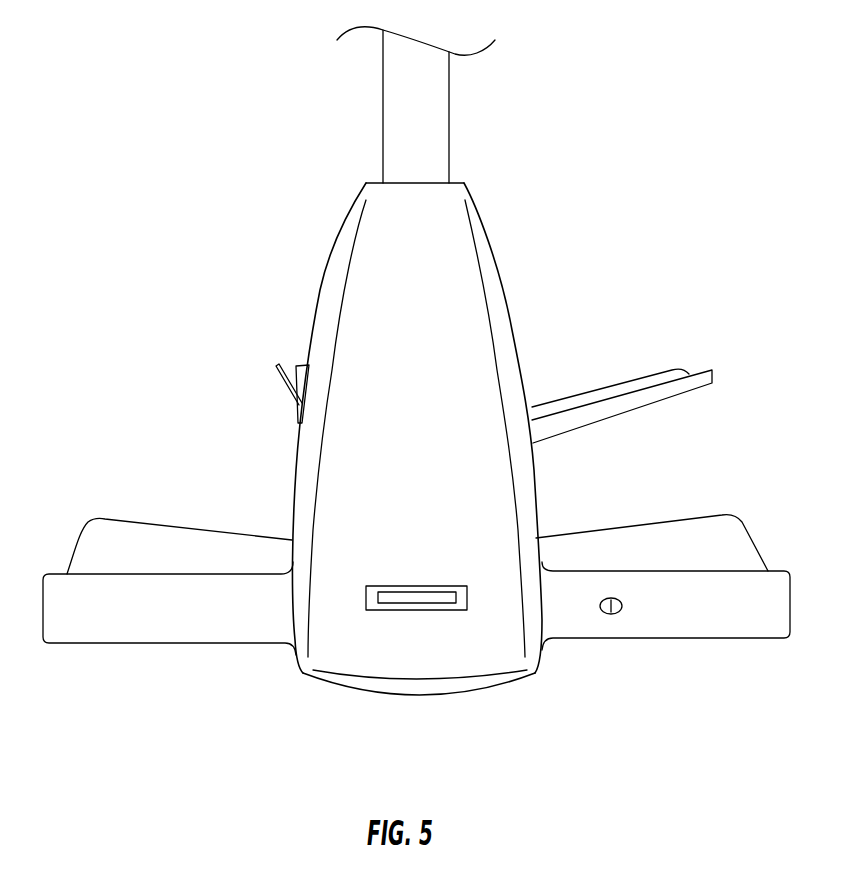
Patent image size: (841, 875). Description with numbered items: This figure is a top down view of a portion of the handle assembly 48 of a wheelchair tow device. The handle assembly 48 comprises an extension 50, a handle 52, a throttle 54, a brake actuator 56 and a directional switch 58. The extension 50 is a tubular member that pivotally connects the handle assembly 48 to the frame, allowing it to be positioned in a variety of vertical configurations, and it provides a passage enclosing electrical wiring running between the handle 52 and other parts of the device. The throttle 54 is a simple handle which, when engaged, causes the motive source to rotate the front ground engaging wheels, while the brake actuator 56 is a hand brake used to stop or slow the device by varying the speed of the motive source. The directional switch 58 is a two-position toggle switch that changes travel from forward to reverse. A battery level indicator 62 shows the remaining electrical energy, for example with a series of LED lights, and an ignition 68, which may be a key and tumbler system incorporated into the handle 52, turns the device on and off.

The handle assembly 48 is at (582, 186).
The extension 50 is at (403, 112).
The handle 52 is at (716, 640).
The throttle 54 is at (643, 398).
The brake actuator 56 is at (83, 527).
The directional switch 58 is at (284, 380).
The battery level indicator 62 is at (414, 610).
The ignition 68 is at (611, 614).